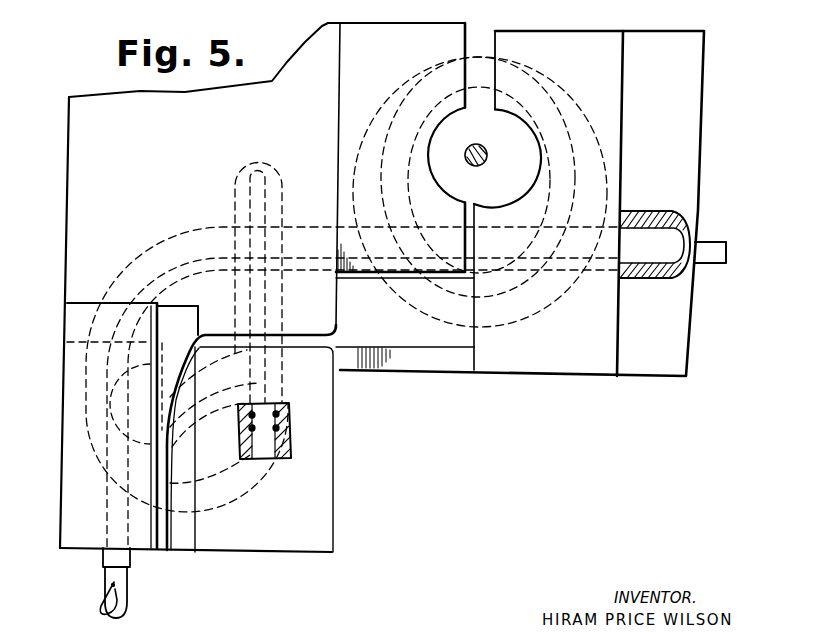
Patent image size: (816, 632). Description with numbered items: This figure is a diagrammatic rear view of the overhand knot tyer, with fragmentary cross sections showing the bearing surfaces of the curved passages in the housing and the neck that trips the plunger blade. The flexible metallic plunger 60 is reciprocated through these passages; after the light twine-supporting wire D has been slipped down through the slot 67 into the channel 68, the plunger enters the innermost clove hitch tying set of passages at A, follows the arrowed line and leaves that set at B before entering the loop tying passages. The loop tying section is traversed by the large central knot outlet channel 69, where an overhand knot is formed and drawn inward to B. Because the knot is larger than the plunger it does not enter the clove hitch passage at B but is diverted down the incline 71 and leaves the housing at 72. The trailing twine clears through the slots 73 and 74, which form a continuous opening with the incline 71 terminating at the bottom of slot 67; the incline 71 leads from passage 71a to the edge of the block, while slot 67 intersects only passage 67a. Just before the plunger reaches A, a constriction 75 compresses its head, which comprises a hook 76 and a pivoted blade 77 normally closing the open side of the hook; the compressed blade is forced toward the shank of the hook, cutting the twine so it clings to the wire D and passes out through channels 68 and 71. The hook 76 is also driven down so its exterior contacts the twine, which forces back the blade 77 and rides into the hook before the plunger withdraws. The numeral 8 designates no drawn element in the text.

The pipe 8 is at (67, 342).
The flexible metallic plunger 60 is at (105, 556).
The slot 67 is at (483, 34).
The passage 67a is at (351, 387).
The channel 68 is at (438, 239).
The knot outlet channel 69 is at (142, 360).
The incline 71 is at (397, 335).
The passage 71a is at (336, 222).
The housing exit 72 is at (424, 347).
The slot 73 is at (337, 362).
The slot 74 is at (166, 546).
The constriction 75 is at (688, 222).
The hook 76 is at (128, 612).
The pivoted blade 77 is at (100, 600).
The clove hitch passage entry point A is at (704, 236).
The clove hitch passage exit point B is at (334, 223).
The light twine-supporting wire D is at (481, 150).